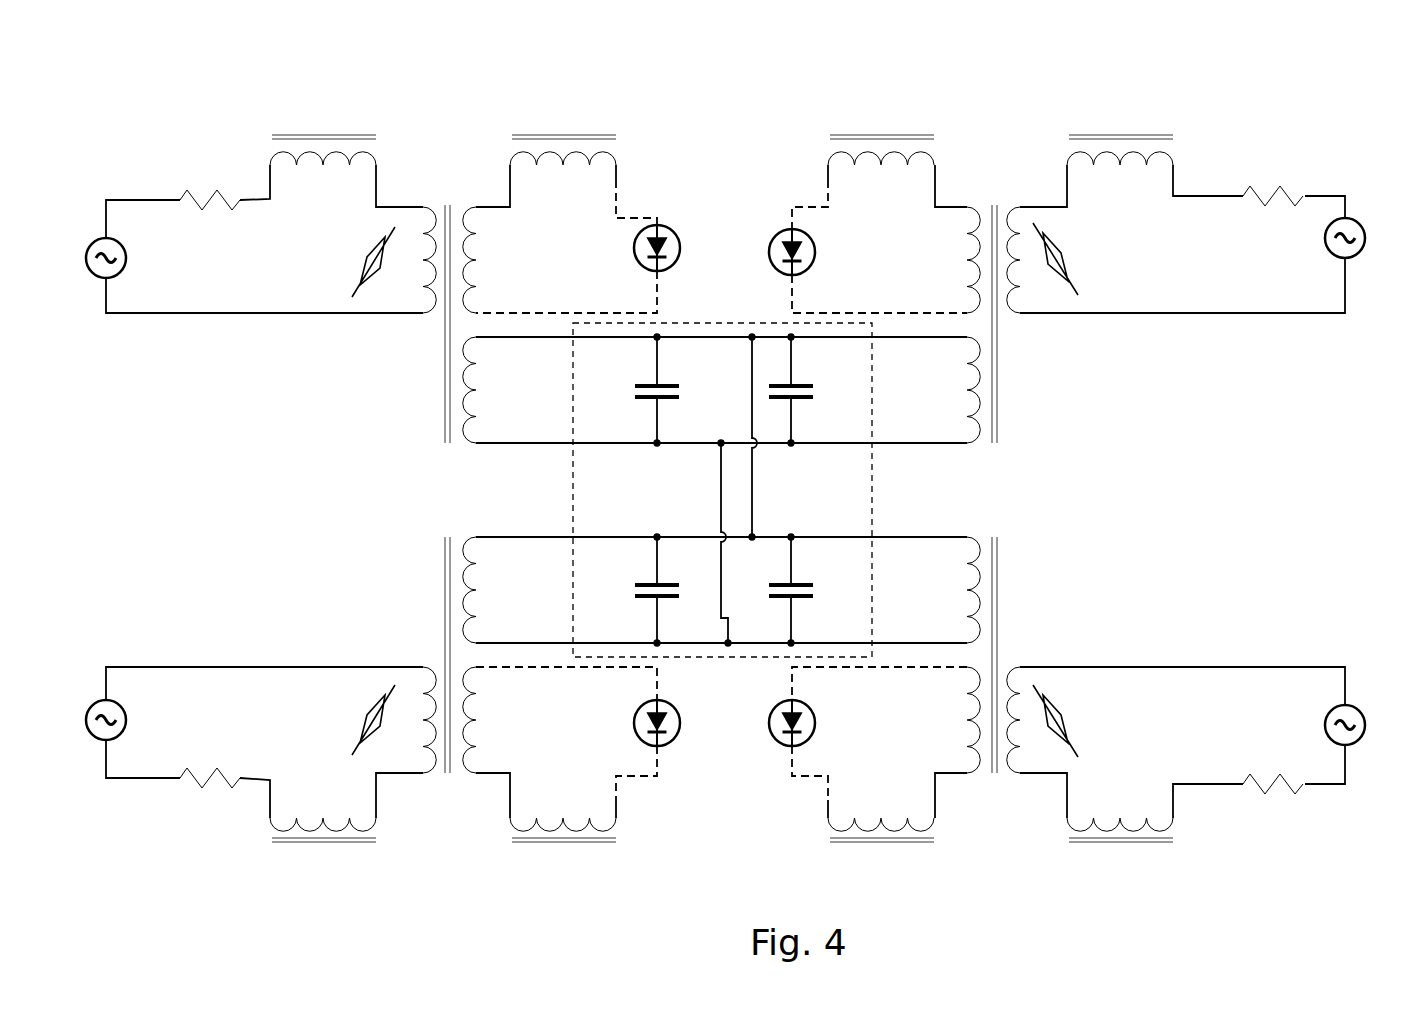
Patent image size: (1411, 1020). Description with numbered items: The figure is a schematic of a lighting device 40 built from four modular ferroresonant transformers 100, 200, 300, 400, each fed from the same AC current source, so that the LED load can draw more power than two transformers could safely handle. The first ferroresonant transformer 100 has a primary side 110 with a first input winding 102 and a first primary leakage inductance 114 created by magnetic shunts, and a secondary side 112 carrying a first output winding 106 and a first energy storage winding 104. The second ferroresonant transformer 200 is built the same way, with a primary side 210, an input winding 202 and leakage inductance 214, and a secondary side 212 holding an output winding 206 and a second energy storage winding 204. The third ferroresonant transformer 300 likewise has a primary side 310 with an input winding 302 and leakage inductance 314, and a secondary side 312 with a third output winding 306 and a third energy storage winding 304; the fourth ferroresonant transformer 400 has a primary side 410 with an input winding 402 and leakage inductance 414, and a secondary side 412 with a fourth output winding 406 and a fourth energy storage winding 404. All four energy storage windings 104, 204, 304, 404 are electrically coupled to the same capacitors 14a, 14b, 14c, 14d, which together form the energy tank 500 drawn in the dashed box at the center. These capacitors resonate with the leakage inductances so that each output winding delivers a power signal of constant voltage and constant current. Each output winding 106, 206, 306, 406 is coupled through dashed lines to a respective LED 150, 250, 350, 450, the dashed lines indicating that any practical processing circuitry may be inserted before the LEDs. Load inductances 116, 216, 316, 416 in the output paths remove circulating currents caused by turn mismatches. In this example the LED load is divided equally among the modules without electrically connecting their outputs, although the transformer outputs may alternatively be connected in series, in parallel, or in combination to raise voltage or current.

The lighting device 40 is at (157, 77).
The first ferroresonant transformer 100 is at (157, 161).
The first input winding 102 is at (410, 318).
The first energy storage winding 104 is at (488, 442).
The first output winding 106 is at (495, 313).
The primary side 110 is at (421, 295).
The secondary side 112 is at (473, 172).
The first primary leakage inductance 114 is at (272, 163).
The first load inductance 116 is at (615, 170).
The LED 150 is at (660, 225).
The second ferroresonant transformer 200 is at (1310, 158).
The first input winding 202 is at (1045, 313).
The second energy storage winding 204 is at (962, 443).
The first output winding 206 is at (940, 313).
The primary side 210 is at (1020, 172).
The secondary side 212 is at (967, 295).
The first leakage inductance 214 is at (1175, 162).
The second load inductance 216 is at (830, 170).
The LED 250 is at (792, 228).
The third ferroresonant transformer 300 is at (157, 613).
The first input winding 302 is at (410, 667).
The third energy storage winding 304 is at (488, 642).
The third output winding 306 is at (495, 667).
The primary side 310 is at (421, 690).
The secondary side 312 is at (473, 811).
The first leakage inductance 314 is at (272, 820).
The load inductance 316 is at (615, 785).
The LED 350 is at (658, 748).
The fourth ferroresonant transformer 400 is at (1225, 639).
The first input winding 402 is at (1040, 667).
The fourth energy storage winding 404 is at (962, 643).
The fourth output winding 406 is at (942, 667).
The primary side 410 is at (1020, 810).
The secondary side 412 is at (967, 688).
The first leakage inductance 414 is at (1175, 820).
The load inductance 416 is at (830, 785).
The LED 450 is at (792, 748).
The capacitor 14a is at (655, 383).
The capacitor 14b is at (793, 383).
The capacitor 14c is at (655, 582).
The capacitor 14d is at (793, 582).
The energy tank 500 is at (760, 323).